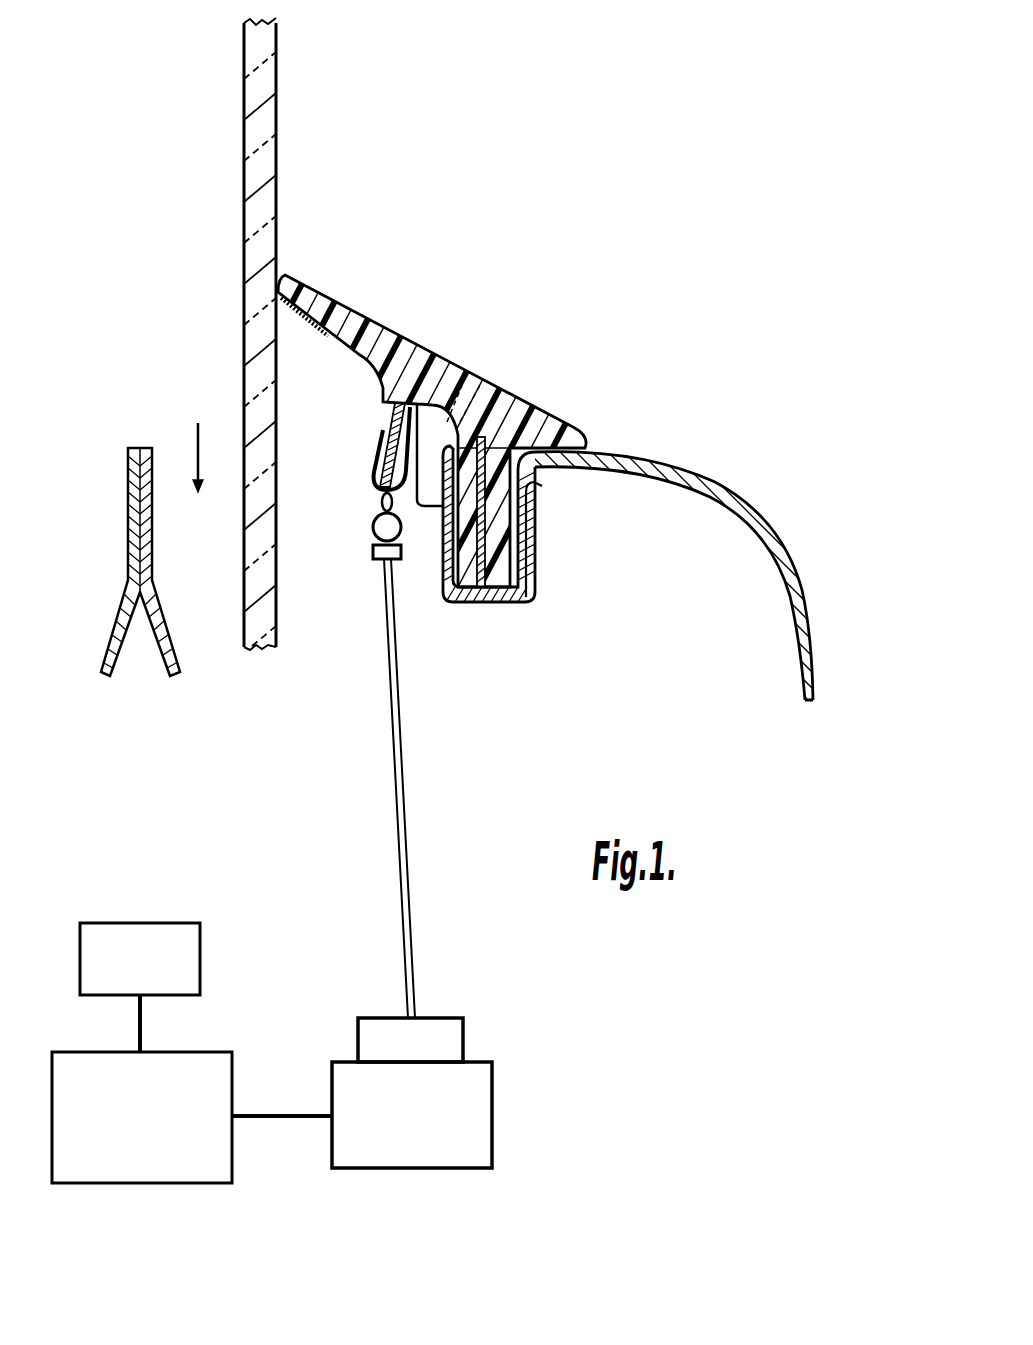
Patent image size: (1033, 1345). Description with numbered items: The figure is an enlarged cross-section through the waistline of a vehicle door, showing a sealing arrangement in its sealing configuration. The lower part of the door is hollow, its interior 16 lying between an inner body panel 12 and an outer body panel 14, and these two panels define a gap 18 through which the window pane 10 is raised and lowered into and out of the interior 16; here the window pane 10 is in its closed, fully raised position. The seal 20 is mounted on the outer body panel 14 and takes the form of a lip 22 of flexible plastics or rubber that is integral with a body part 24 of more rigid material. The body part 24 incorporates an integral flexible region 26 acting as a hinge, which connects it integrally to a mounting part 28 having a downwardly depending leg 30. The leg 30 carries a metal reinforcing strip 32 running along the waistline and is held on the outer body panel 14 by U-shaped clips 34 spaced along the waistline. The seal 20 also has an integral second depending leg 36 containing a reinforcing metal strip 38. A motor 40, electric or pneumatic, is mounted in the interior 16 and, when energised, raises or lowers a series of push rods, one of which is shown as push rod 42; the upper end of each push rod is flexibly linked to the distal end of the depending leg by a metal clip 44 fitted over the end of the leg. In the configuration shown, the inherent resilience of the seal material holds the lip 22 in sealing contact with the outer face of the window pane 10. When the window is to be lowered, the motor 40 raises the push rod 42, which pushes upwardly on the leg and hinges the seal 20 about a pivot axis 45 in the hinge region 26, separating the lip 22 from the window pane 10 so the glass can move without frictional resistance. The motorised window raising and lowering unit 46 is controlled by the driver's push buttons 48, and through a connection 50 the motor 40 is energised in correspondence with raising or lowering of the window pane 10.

The window pane 10 is at (263, 172).
The inner body panel 12 is at (128, 511).
The outer body panel 14 is at (723, 490).
The interior 16 is at (291, 759).
The gap 18 is at (202, 443).
The seal 20 is at (401, 437).
The lip 22 is at (322, 285).
The body part 24 is at (466, 374).
The flexible region 26 is at (483, 385).
The mounting part 28 is at (548, 413).
The leg 30 is at (448, 602).
The metal reinforcing strip 32 is at (495, 602).
The U-shaped clips 34 is at (538, 552).
The second depending leg 36 is at (373, 443).
The reinforcing metal strip 38 is at (380, 427).
The motor 40 is at (487, 1100).
The push rod 42 is at (403, 792).
The metal clip 44 is at (372, 532).
The pivot axis 45 is at (456, 372).
The window raising and lowering unit 46 is at (178, 1052).
The push buttons 48 is at (152, 923).
The connection 50 is at (282, 1118).